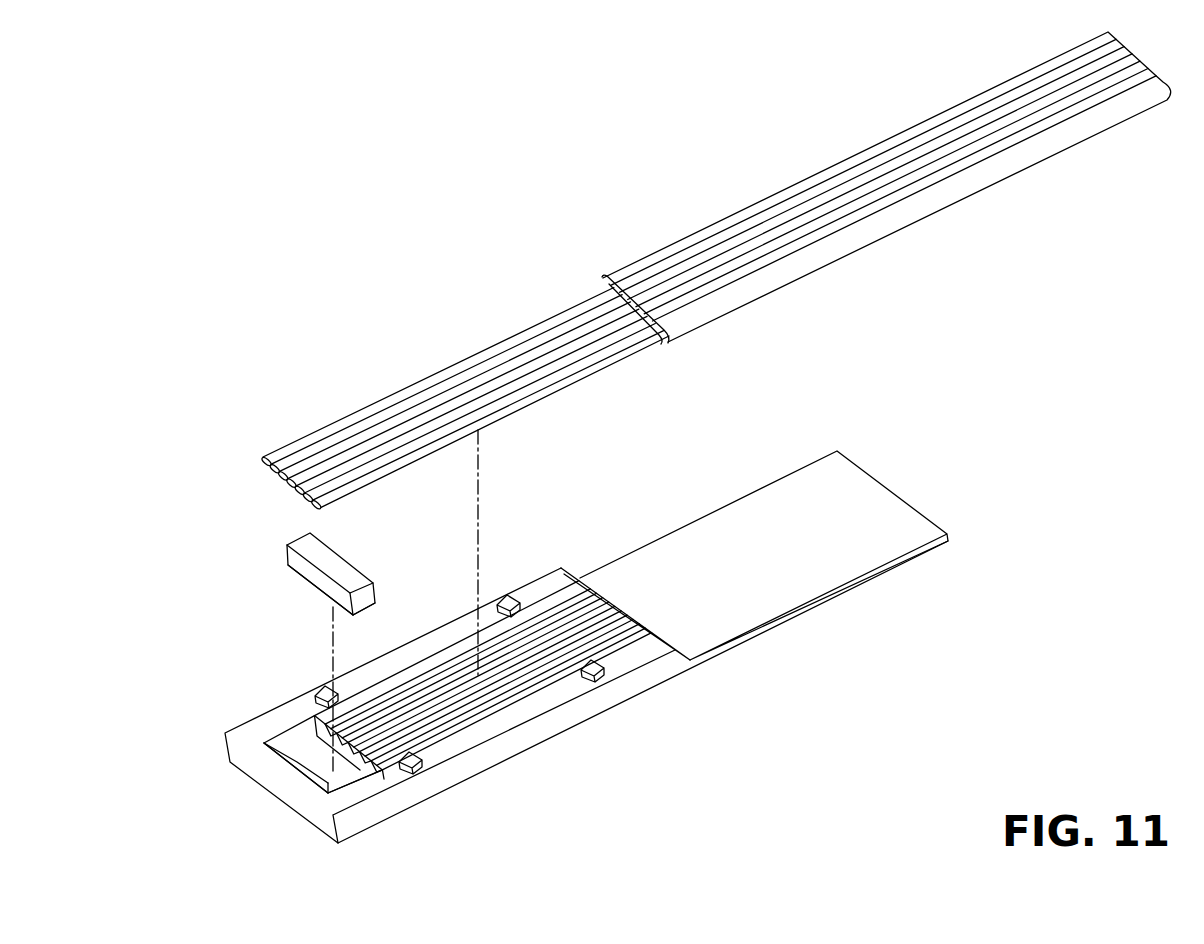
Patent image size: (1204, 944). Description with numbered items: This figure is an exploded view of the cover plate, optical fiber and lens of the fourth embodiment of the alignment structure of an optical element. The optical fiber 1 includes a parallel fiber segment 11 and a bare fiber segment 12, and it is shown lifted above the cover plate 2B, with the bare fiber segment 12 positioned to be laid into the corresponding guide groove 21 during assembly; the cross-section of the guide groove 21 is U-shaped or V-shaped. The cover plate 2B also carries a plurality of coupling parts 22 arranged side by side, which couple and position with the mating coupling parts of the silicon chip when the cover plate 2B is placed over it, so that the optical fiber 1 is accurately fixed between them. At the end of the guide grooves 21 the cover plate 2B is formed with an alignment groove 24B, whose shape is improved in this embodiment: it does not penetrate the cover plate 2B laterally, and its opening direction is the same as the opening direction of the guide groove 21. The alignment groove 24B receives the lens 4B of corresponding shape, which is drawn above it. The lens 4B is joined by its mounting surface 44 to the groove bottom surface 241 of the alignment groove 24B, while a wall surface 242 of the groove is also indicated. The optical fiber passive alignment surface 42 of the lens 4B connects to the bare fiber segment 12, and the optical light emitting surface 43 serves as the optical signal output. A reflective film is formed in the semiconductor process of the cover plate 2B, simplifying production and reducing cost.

The optical fiber 1 is at (578, 152).
The parallel fiber segment 11 is at (640, 267).
The bare fiber segment 12 is at (563, 307).
The cover plate 2B is at (556, 727).
The guide groove 21 is at (471, 712).
The coupling parts 22 is at (509, 595).
The alignment groove 24B is at (296, 742).
The groove bottom surface 241 is at (307, 793).
The recess front wall 242 is at (268, 770).
The lens 4B is at (300, 540).
The optical fiber passive alignment surface 42 is at (375, 592).
The optical light emitting surface 43 is at (312, 579).
The mounting surface 44 is at (367, 610).